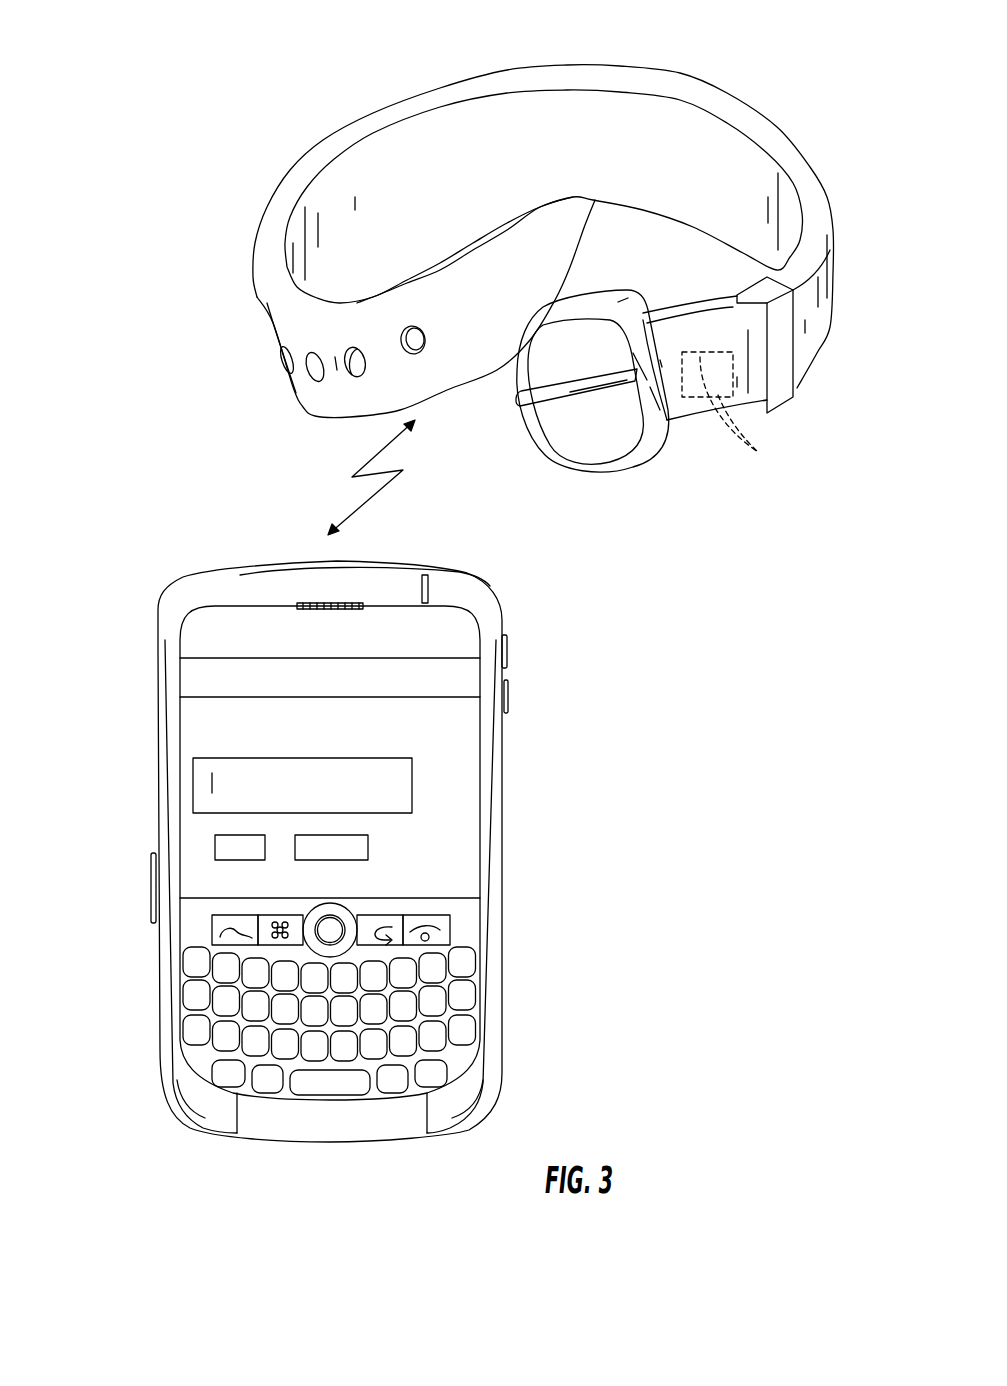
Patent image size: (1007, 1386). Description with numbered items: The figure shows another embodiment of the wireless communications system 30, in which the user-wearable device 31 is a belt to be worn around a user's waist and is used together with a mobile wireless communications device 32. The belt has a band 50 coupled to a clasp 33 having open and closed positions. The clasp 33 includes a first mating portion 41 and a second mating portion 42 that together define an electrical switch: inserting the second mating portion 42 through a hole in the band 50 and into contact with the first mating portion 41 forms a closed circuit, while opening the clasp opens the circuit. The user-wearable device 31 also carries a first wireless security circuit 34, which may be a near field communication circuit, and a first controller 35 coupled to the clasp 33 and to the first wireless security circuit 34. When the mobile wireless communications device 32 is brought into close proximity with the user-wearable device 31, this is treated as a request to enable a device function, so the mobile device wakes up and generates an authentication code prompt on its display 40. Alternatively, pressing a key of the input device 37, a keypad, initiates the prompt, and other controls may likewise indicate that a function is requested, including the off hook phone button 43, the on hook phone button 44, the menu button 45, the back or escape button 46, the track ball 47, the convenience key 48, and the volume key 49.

The wireless communications system 30 is at (305, 112).
The user-wearable device 31 is at (800, 100).
The band 50 is at (267, 327).
The clasp 33 is at (577, 490).
The first mating portion 41 is at (550, 453).
The second mating portion 42 is at (517, 400).
The first wireless security circuit 34 is at (797, 385).
The first controller 35 is at (752, 414).
The mobile wireless communications device 32 is at (116, 1071).
The display 40 is at (183, 715).
The menu button 45 is at (222, 843).
The off hook phone button 43 is at (217, 937).
The back or escape button 46 is at (395, 915).
The track ball 47 is at (340, 915).
The on hook phone button 44 is at (445, 917).
The input device 37 is at (477, 993).
The convenience key 48 is at (152, 877).
The volume key 49 is at (508, 695).